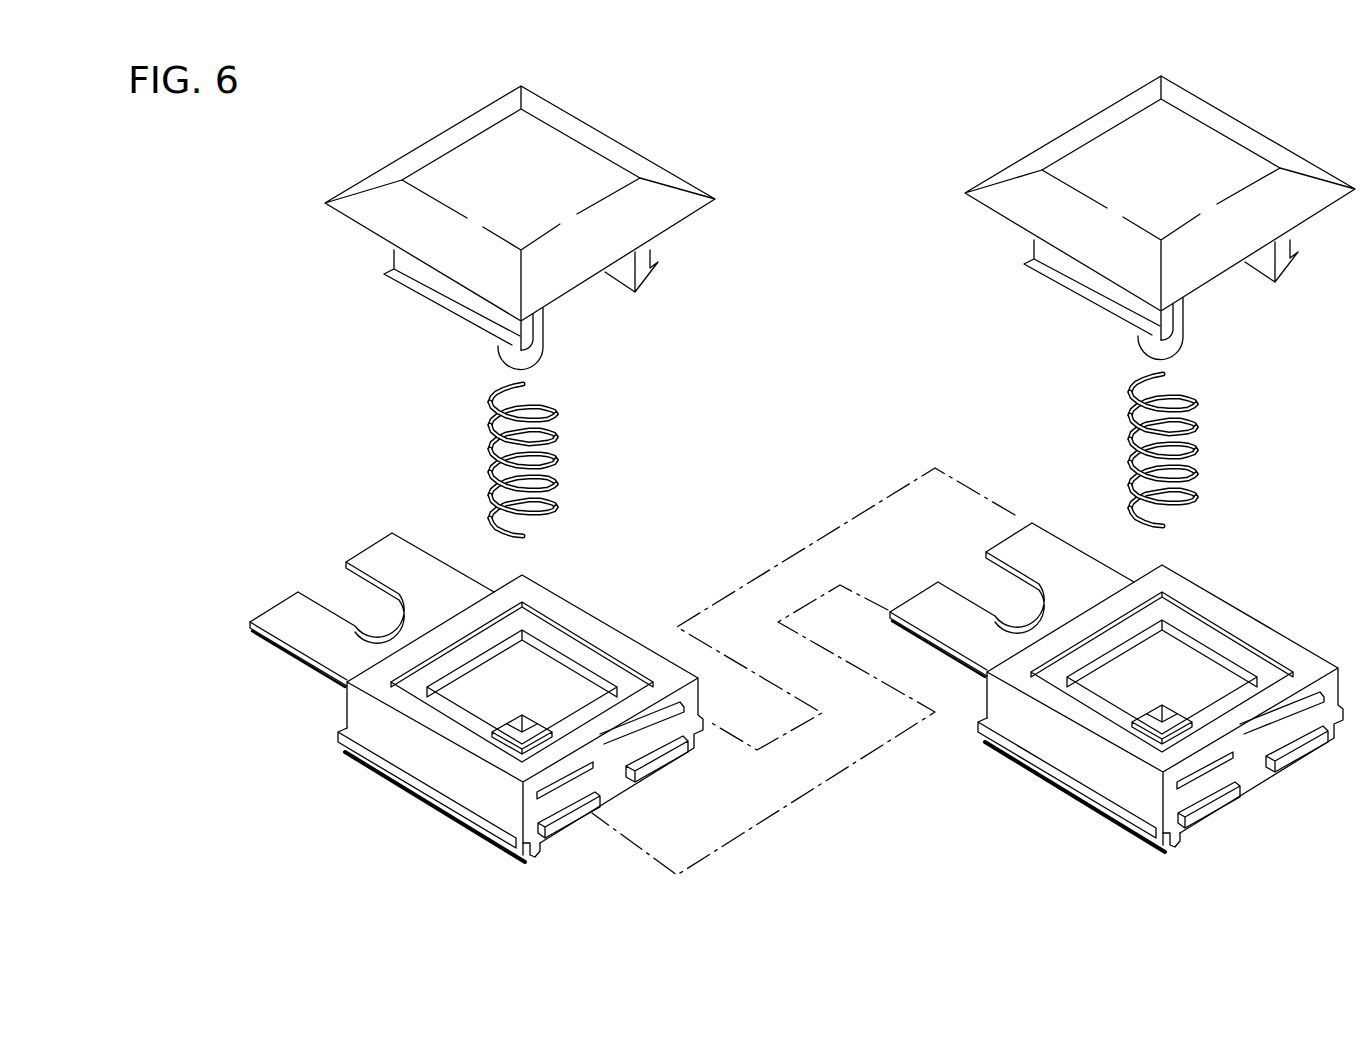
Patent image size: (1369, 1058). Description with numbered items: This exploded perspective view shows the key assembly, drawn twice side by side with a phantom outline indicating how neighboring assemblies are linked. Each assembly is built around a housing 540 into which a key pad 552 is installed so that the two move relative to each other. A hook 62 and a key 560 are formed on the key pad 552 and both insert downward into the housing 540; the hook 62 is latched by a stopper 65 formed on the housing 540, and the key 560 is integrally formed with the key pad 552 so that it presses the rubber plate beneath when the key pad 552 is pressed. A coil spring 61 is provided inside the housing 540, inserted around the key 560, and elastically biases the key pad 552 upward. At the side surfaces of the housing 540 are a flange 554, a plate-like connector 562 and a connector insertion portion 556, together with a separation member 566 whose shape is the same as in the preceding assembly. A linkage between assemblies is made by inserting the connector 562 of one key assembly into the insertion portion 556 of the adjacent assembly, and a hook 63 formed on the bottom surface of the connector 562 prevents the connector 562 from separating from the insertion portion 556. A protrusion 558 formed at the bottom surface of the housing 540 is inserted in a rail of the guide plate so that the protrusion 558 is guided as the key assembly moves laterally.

The key pad 552 is at (667, 180).
The hook 62 is at (647, 273).
The key 560 is at (540, 337).
The coil spring 61 is at (550, 452).
The connector 562 is at (372, 557).
The hook 63 is at (255, 632).
The housing 540 is at (462, 785).
The stopper 65 is at (570, 630).
The flange 554 is at (378, 762).
The connector insertion portion 556 is at (620, 747).
The separation member 566 is at (587, 810).
The protrusion 558 is at (537, 857).